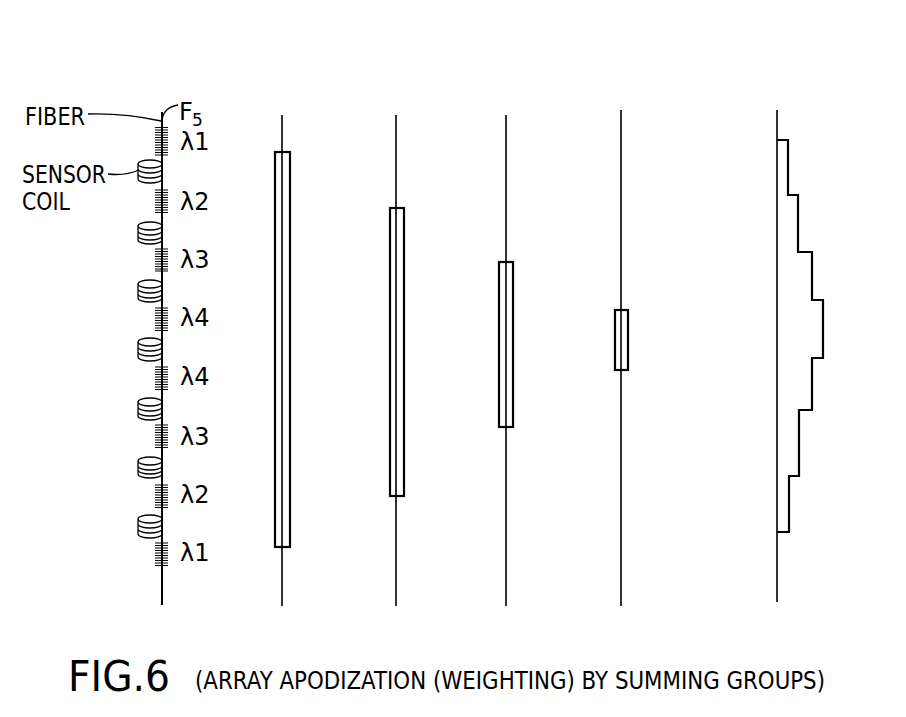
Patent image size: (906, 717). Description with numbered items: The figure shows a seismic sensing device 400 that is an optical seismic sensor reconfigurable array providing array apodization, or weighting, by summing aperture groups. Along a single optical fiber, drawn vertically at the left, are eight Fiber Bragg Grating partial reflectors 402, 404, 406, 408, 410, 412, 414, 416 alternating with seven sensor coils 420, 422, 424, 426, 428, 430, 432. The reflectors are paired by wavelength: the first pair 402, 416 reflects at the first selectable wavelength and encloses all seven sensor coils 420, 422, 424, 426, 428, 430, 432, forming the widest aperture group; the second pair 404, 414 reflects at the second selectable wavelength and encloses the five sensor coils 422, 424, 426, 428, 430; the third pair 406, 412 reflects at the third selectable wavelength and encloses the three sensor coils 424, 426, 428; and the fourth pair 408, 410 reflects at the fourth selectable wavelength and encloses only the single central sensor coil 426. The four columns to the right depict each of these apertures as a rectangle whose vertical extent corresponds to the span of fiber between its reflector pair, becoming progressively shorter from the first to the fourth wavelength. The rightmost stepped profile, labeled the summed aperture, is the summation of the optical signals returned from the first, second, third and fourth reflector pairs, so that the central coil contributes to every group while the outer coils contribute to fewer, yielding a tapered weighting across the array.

The seismic sensing device 400 is at (640, 36).
The Fiber Bragg Grating partial reflector 402 is at (156, 143).
The Fiber Bragg Grating partial reflector 404 is at (156, 203).
The Fiber Bragg Grating partial reflector 406 is at (156, 261).
The Fiber Bragg Grating partial reflector 408 is at (156, 319).
The Fiber Bragg Grating partial reflector 410 is at (156, 378).
The Fiber Bragg Grating partial reflector 412 is at (156, 438).
The Fiber Bragg Grating partial reflector 414 is at (156, 496).
The Fiber Bragg Grating partial reflector 416 is at (156, 554).
The sensor coil 420 is at (163, 166).
The sensor coil 422 is at (163, 226).
The sensor coil 424 is at (163, 284).
The sensor coil 426 is at (163, 344).
The sensor coil 428 is at (163, 403).
The sensor coil 430 is at (163, 461).
The sensor coil 432 is at (163, 520).